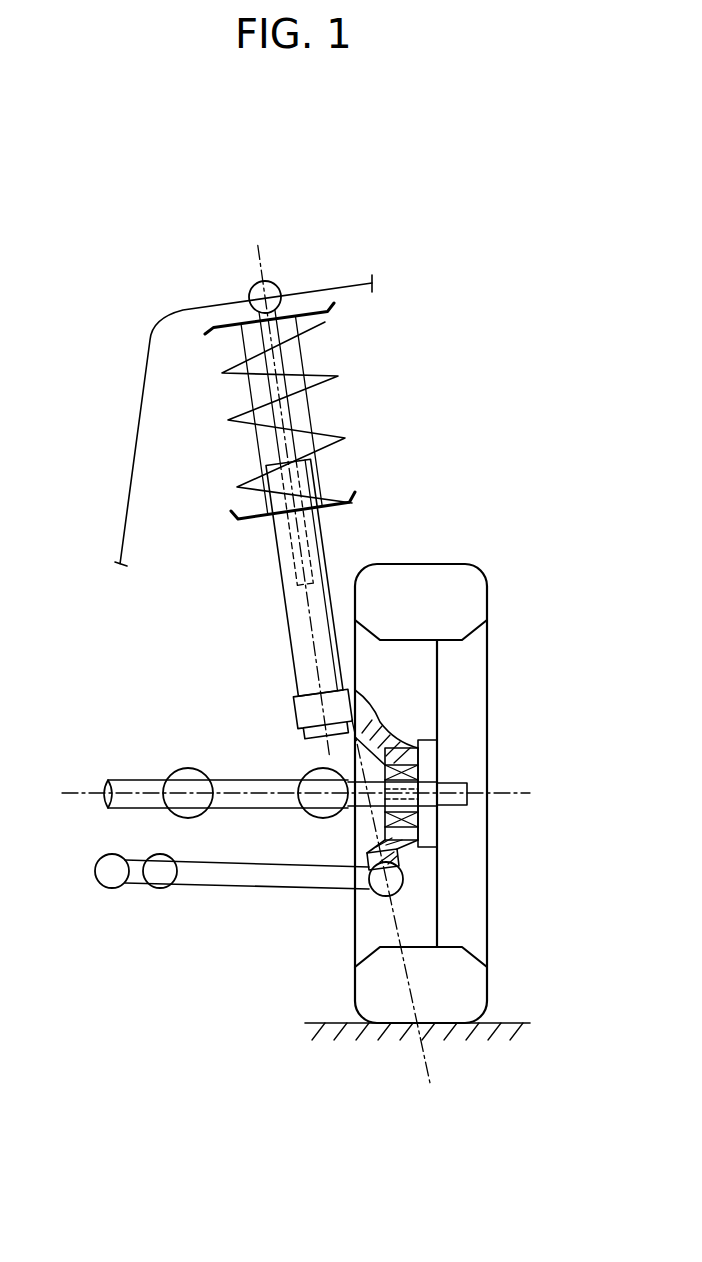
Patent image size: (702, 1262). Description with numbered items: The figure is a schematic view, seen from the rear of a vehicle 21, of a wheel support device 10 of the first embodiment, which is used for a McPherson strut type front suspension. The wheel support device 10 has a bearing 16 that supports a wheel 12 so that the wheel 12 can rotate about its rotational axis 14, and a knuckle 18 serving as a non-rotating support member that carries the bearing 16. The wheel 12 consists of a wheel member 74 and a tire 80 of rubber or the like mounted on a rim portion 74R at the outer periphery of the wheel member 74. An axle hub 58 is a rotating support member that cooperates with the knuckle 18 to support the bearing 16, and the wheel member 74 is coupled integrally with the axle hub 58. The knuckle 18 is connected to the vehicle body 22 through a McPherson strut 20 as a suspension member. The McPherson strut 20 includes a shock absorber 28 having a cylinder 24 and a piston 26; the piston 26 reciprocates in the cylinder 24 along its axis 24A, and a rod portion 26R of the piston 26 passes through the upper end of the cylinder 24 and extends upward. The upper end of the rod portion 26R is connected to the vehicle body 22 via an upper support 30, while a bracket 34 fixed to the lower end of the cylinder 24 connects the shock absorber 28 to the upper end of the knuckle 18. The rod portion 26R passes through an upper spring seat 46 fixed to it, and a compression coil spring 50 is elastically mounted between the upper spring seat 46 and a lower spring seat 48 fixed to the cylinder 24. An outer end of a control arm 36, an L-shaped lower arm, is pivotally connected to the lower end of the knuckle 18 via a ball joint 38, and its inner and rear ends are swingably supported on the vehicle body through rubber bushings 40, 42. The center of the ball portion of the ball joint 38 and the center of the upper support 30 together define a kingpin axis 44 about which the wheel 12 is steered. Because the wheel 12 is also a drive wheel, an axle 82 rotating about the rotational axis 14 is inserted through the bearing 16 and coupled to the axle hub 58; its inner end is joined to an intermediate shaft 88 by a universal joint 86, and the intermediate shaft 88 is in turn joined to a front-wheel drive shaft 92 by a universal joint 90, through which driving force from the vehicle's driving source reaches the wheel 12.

The wheel support device 10 is at (459, 769).
The wheel 12 is at (459, 769).
The rotational axis 14 is at (518, 779).
The bearing 16 is at (380, 810).
The knuckle 18 is at (383, 738).
The McPherson strut 20 is at (342, 413).
The vehicle 21 is at (120, 338).
The vehicle body 22 is at (330, 290).
The cylinder 24 is at (332, 554).
The axis 24A is at (267, 266).
The piston 26 is at (286, 580).
The rod portion 26R is at (273, 438).
The shock absorber 28 is at (281, 484).
The upper support 30 is at (250, 290).
The bracket 34 is at (296, 706).
The control arm 36 is at (242, 905).
The ball joint 38 is at (380, 892).
The rubber bushing 40 is at (108, 886).
The rubber bushing 42 is at (160, 884).
The kingpin axis 44 is at (425, 1062).
The upper spring seat 46 is at (338, 310).
The lower spring seat 48 is at (230, 524).
The compression coil spring 50 is at (328, 450).
The axle hub 58 is at (428, 822).
The wheel member 74 is at (440, 672).
The rim portion 74R is at (470, 966).
The tire 80 is at (490, 590).
The axle 82 is at (466, 808).
The universal joint 86 is at (312, 780).
The intermediate shaft 88 is at (216, 794).
The universal joint 90 is at (193, 812).
The front-wheel drive shaft 92 is at (138, 782).